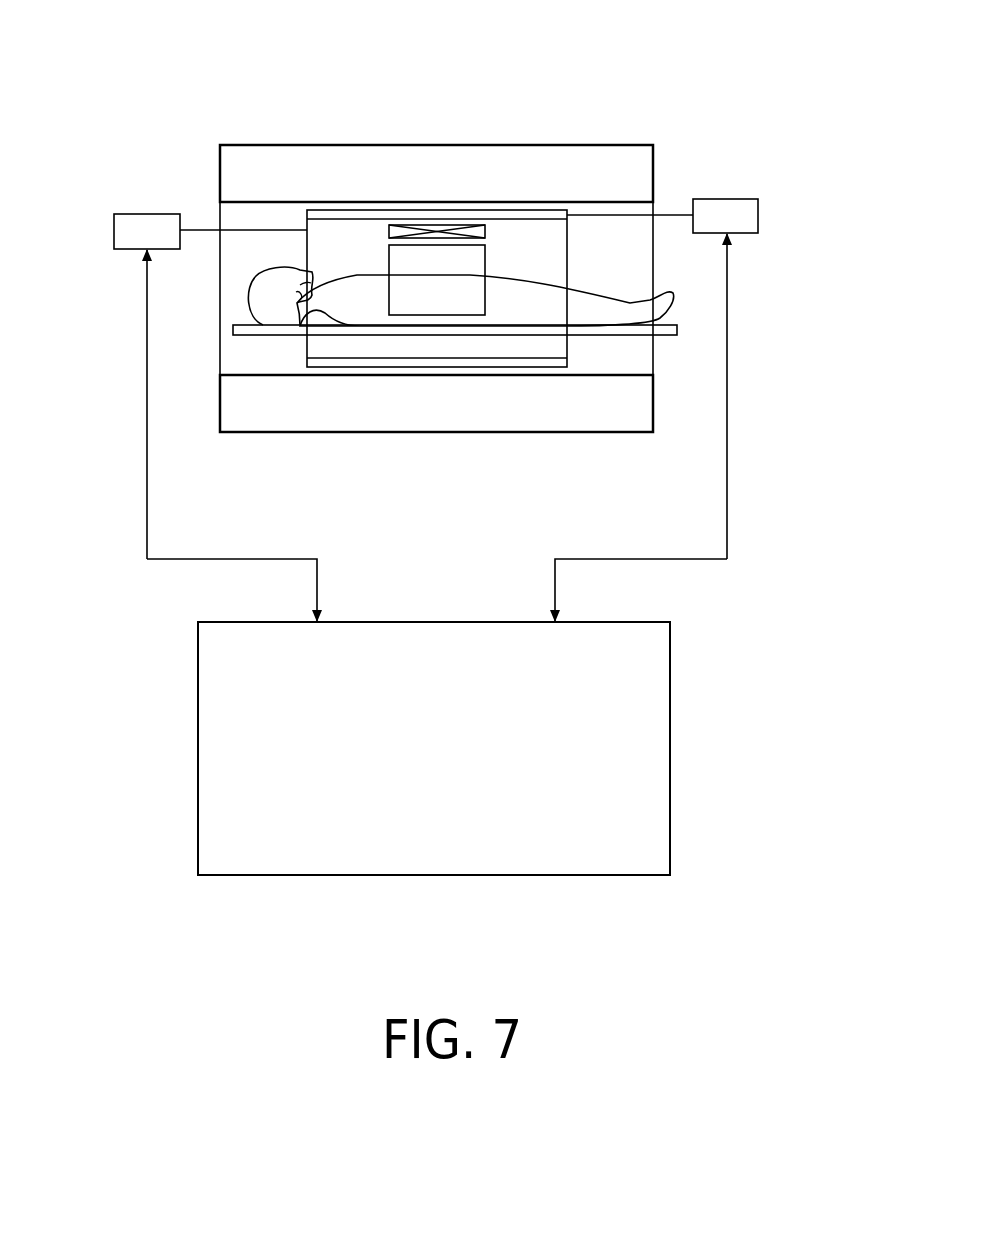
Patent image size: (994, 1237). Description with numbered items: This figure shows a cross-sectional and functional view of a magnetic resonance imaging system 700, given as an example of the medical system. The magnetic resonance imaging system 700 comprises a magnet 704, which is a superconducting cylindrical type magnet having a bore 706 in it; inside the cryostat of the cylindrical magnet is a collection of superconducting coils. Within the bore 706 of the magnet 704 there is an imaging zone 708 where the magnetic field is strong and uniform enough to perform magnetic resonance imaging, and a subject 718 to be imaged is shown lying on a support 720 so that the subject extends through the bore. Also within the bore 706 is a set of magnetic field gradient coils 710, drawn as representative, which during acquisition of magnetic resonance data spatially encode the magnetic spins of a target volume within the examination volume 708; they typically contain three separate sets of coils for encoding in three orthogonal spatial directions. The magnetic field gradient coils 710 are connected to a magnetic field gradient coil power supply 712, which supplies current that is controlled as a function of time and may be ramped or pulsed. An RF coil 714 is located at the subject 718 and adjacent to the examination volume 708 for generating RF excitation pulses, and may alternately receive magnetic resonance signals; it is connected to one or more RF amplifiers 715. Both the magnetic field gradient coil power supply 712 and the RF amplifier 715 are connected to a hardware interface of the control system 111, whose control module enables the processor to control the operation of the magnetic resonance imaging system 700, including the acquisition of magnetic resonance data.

The magnetic resonance imaging system 700 is at (586, 104).
The magnet 704 is at (654, 178).
The bore 706 is at (516, 271).
The imaging zone 708 is at (485, 258).
The magnetic field gradient coils 710 is at (340, 210).
The magnetic field gradient coil power supply 712 is at (656, 410).
The RF coil 714 is at (485, 228).
The RF amplifier 715 is at (215, 417).
The subject 718 is at (250, 287).
The subject support 720 is at (233, 326).
The control system 111 is at (428, 622).